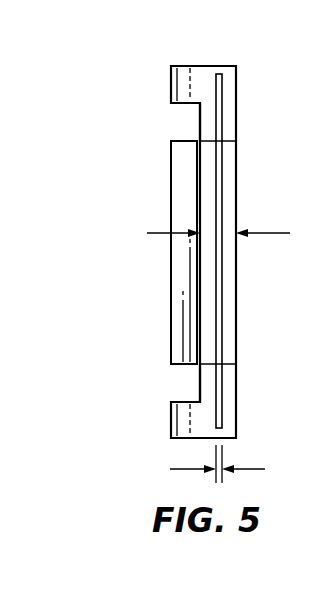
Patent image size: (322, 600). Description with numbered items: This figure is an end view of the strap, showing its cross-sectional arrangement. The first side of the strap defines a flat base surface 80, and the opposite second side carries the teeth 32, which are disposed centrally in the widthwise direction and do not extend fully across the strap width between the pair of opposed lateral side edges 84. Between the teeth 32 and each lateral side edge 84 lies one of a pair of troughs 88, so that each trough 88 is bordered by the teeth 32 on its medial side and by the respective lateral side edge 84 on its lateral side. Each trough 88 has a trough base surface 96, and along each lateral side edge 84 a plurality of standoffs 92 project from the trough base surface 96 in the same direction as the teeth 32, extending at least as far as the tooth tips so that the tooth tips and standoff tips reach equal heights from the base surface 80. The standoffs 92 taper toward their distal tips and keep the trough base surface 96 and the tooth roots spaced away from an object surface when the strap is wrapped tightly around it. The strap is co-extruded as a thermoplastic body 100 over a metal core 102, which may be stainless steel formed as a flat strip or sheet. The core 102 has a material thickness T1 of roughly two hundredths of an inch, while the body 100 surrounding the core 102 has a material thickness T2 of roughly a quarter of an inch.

The base surface 80 is at (242, 204).
The lateral side edges 84 is at (208, 66).
The troughs 88 is at (183, 114).
The standoffs 92 is at (178, 85).
The trough base surface 96 is at (190, 122).
The thermoplastic body 100 is at (229, 119).
The core 102 is at (222, 162).
The teeth 32 is at (177, 272).
The material thickness of core T1 is at (250, 468).
The material thickness of body T2 is at (270, 234).